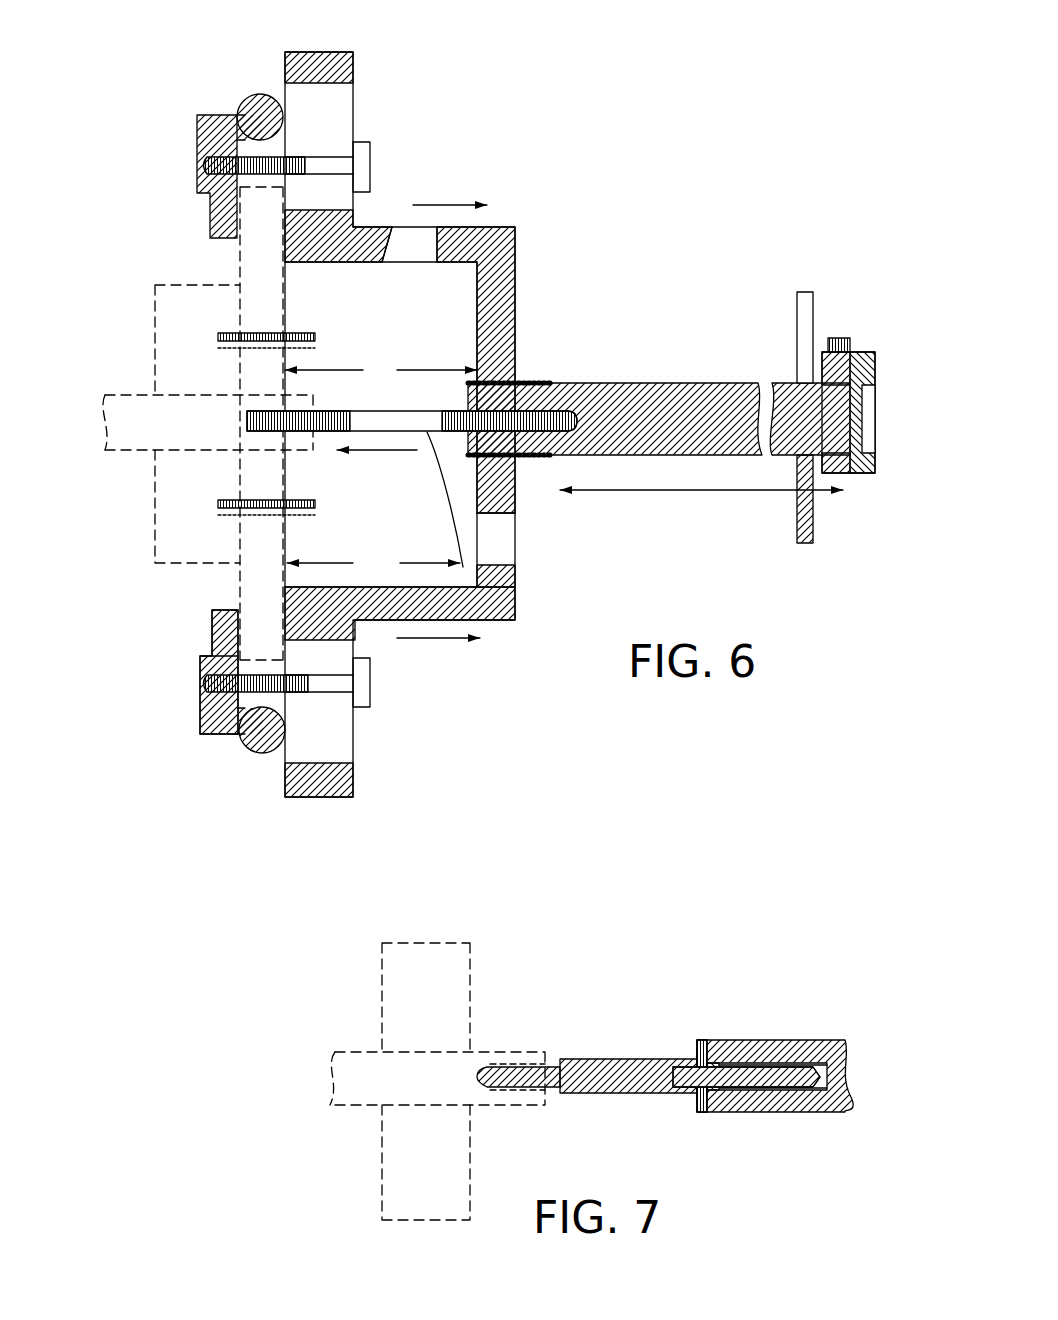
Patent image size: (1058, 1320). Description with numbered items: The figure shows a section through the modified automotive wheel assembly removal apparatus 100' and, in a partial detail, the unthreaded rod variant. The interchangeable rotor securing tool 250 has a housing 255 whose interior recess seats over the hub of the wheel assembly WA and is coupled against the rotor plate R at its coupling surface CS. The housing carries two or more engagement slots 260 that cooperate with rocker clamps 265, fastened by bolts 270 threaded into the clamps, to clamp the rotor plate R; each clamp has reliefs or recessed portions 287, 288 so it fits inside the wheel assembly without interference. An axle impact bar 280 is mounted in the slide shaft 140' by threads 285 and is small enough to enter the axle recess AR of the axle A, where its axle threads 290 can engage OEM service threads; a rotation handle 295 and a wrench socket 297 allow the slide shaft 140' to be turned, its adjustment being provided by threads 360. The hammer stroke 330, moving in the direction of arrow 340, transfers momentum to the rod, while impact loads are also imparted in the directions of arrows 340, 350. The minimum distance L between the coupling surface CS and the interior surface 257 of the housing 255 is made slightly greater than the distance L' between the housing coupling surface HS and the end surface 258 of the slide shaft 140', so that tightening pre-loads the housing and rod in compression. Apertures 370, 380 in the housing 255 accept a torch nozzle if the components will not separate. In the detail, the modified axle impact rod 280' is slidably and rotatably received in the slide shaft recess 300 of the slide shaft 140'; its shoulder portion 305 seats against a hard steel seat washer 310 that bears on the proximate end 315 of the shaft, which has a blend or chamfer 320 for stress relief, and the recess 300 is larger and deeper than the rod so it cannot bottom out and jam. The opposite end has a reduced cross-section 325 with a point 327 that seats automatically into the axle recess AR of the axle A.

In FIG. 6, the automotive wheel assembly removal apparatus 100' is at (596, 135).
In FIG. 7, the automotive wheel assembly removal apparatus 100' is at (730, 935).
In FIG. 6, the slide shaft 140' is at (759, 382).
In FIG. 7, the slide shaft 140' is at (812, 1011).
In FIG. 6, the interchangeable rotor securing tool 250 is at (520, 257).
In FIG. 6, the housing 255 is at (517, 598).
In FIG. 6, the interior surface 257 is at (522, 300).
In FIG. 6, the end or surface of the slide shaft 258 is at (468, 383).
In FIG. 6, the engagement slots 260 is at (333, 97).
In FIG. 6, the rocker clamps 265 is at (197, 143).
In FIG. 6, the bolts 270 is at (372, 142).
In FIG. 6, the axle impact bar 280 is at (615, 462).
In FIG. 7, the modified axle impact rod 280' is at (628, 1037).
In FIG. 6, the threads 285 is at (620, 383).
In FIG. 6, the relief or recessed portion 287 is at (210, 220).
In FIG. 6, the relief or recessed portion 288 is at (217, 117).
In FIG. 6, the axle threads 290 is at (247, 420).
In FIG. 6, the rotation handle 295 is at (797, 312).
In FIG. 6, the wrench socket 297 is at (863, 477).
In FIG. 7, the slide shaft recess 300 is at (805, 1112).
In FIG. 7, the shoulder portion 305 is at (680, 1093).
In FIG. 7, the hard steel seat washer 310 is at (700, 1037).
In FIG. 7, the proximate end 315 is at (712, 1108).
In FIG. 7, the blend or chamfer 320 is at (722, 1046).
In FIG. 7, the reduced cross-section 325 is at (558, 1063).
In FIG. 7, the point 327 is at (480, 1087).
In FIG. 6, the stroke 330 is at (665, 490).
In FIG. 6, the direction arrow 340 is at (390, 450).
In FIG. 6, the direction arrow 350 is at (440, 205).
In FIG. 6, the threads 360 is at (562, 383).
In FIG. 6, the aperture 370 is at (497, 563).
In FIG. 6, the aperture 380 is at (440, 220).
In FIG. 6, the axle A is at (130, 398).
In FIG. 7, the axle A is at (360, 1108).
In FIG. 6, the axle recess AR is at (247, 419).
In FIG. 7, the axle recess AR is at (478, 1067).
In FIG. 6, the coupling surface CS is at (287, 312).
In FIG. 6, the housing coupling surface HS is at (285, 777).
In FIG. 6, the minimum distance L is at (381, 372).
In FIG. 6, the distance L' is at (373, 567).
In FIG. 6, the rotor plate R is at (240, 587).
In FIG. 6, the wheel assembly WA is at (158, 285).
In FIG. 7, the wheel assembly WA is at (380, 1010).